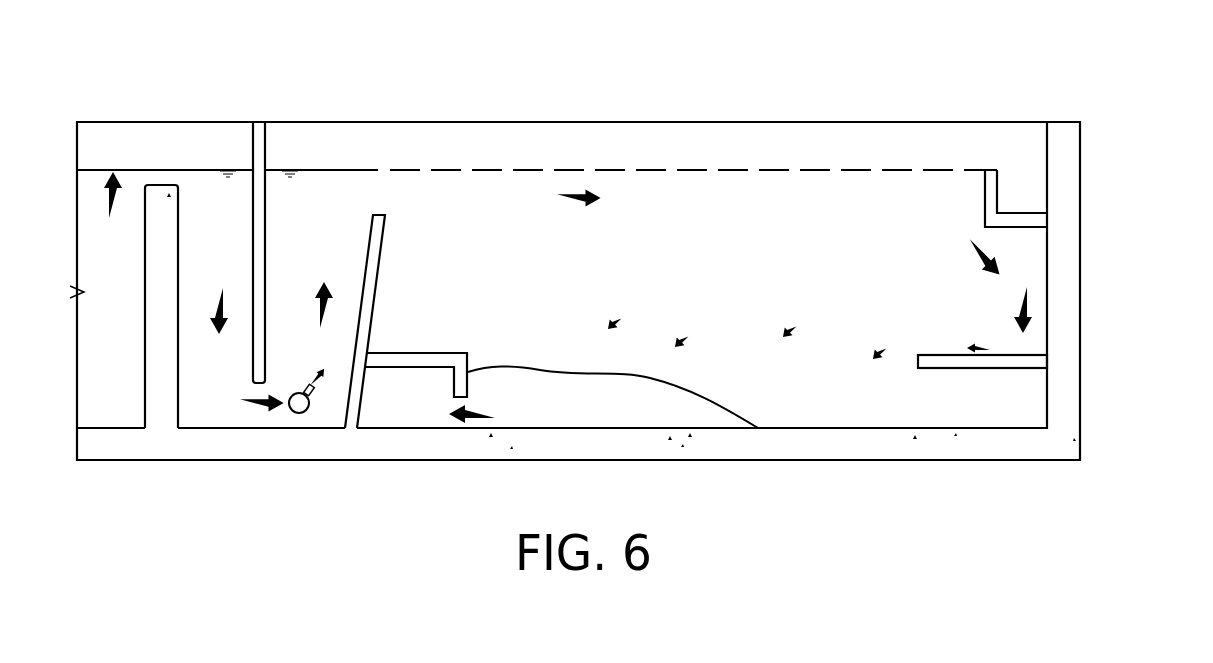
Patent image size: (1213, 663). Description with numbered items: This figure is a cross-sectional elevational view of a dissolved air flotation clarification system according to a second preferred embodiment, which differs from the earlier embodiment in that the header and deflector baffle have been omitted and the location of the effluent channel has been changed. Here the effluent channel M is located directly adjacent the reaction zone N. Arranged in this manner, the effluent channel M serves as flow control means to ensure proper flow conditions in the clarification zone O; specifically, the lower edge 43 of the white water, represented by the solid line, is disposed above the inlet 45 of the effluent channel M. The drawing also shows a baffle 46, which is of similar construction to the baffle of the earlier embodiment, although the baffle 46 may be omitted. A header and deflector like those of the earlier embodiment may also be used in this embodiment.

The reaction zone N is at (318, 217).
The clarification zone O is at (680, 215).
The effluent channel M is at (393, 405).
The inlet 45 is at (468, 398).
The lower edge of white water 43 is at (717, 400).
The baffle 46 is at (1018, 368).